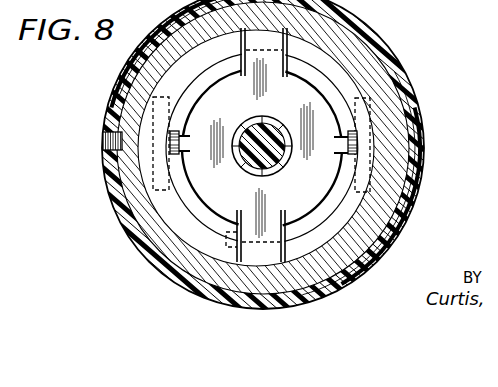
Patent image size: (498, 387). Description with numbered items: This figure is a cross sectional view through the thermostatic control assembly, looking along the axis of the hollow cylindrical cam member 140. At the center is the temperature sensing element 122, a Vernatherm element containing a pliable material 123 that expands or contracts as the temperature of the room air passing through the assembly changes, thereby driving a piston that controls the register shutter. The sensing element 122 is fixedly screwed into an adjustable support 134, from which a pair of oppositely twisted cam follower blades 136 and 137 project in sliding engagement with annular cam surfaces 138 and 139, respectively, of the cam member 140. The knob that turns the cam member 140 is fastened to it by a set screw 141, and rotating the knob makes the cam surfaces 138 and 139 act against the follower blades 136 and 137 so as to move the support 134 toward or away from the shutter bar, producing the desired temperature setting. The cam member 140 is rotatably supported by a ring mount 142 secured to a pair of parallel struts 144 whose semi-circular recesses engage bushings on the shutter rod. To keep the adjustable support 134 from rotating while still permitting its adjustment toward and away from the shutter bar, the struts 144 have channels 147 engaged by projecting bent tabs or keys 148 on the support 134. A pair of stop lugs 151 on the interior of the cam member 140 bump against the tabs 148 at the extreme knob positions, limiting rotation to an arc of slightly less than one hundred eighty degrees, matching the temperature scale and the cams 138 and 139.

The temperature sensing element 122 is at (267, 117).
The pliable material 123 is at (270, 173).
The adjustable support 134 is at (293, 72).
The cam follower blade 136 is at (270, 50).
The cam follower blade 137 is at (273, 308).
The annular cam surface 138 is at (200, 62).
The annular cam surface 139 is at (196, 223).
The cam member 140 is at (384, 51).
The set screw 141 is at (103, 138).
The ring mount 142 is at (367, 147).
The struts 144 is at (114, 112).
The channels 147 is at (192, 152).
The tabs or keys 148 is at (185, 133).
The stop lugs 151 is at (234, 235).